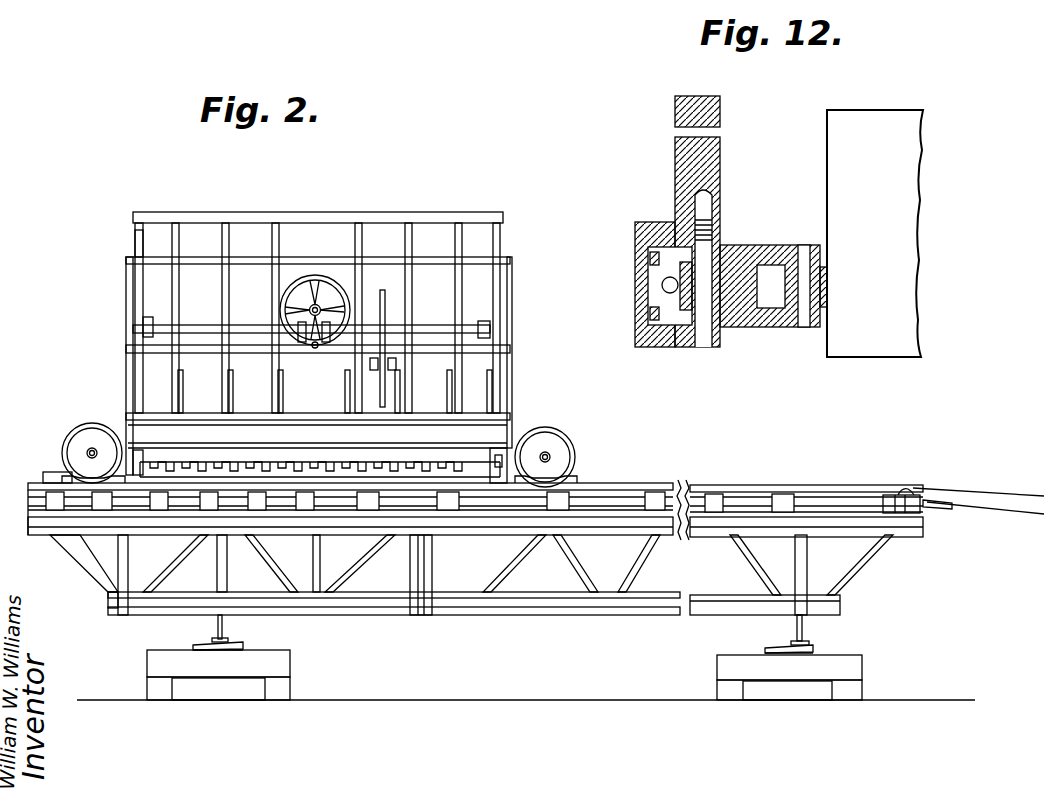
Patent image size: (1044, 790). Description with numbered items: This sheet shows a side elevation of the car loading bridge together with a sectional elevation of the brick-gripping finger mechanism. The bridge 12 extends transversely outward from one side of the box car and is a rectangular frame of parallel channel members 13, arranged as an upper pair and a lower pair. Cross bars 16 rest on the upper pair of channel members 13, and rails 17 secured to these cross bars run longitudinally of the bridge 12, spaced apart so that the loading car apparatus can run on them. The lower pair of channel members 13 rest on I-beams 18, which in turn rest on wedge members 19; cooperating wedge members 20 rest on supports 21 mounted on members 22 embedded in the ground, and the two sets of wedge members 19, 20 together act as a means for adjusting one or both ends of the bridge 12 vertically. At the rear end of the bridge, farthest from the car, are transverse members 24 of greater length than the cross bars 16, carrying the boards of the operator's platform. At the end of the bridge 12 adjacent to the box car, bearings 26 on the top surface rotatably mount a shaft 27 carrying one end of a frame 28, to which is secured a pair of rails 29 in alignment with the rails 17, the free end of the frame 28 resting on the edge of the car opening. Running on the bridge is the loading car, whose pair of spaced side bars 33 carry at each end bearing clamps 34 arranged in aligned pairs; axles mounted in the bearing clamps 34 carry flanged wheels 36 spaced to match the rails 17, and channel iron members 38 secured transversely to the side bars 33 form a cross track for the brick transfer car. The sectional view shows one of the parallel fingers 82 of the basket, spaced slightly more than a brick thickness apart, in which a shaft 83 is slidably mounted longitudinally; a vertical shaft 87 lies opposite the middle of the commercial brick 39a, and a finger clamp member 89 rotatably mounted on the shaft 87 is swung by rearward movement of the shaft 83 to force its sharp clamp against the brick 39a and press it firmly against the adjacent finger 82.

In FIG. 2, the bridge 12 is at (525, 617).
In FIG. 2, the channel members 13 is at (913, 526).
In FIG. 2, the cross bars 16 is at (653, 500).
In FIG. 2, the rails 17 is at (866, 487).
In FIG. 2, the I-beams 18 is at (223, 627).
In FIG. 2, the wedge members 19 is at (243, 648).
In FIG. 2, the wedge members 20 is at (197, 648).
In FIG. 2, the supports 21 is at (282, 667).
In FIG. 2, the members 22 is at (283, 694).
In FIG. 2, the transverse members 24 is at (32, 495).
In FIG. 2, the bearings 26 is at (910, 496).
In FIG. 2, the shaft 27 is at (906, 490).
In FIG. 2, the frame 28 is at (940, 500).
In FIG. 2, the rails 29 is at (990, 491).
In FIG. 2, the side bars 33 is at (80, 432).
In FIG. 2, the bearing clamps 34 is at (113, 467).
In FIG. 2, the flanged wheels 36 is at (557, 447).
In FIG. 2, the channel iron member 38 is at (138, 473).
In FIG. 12, the fingers 82 is at (728, 170).
In FIG. 12, the shafts 83 is at (662, 285).
In FIG. 12, the shafts 87 is at (706, 347).
In FIG. 12, the finger clamp member 89 is at (786, 327).
In FIG. 12, the commercial brick 39a is at (892, 125).